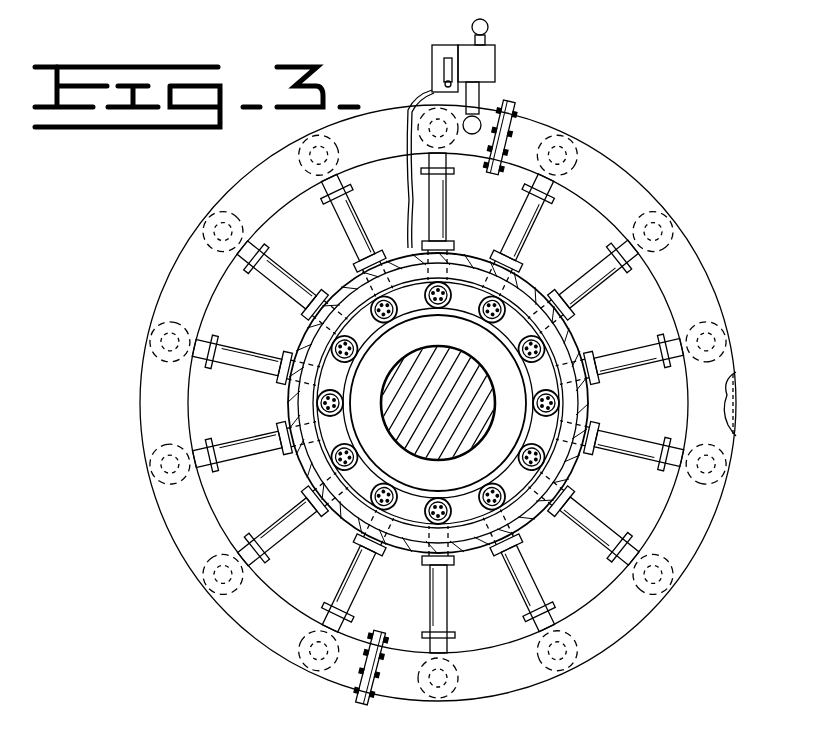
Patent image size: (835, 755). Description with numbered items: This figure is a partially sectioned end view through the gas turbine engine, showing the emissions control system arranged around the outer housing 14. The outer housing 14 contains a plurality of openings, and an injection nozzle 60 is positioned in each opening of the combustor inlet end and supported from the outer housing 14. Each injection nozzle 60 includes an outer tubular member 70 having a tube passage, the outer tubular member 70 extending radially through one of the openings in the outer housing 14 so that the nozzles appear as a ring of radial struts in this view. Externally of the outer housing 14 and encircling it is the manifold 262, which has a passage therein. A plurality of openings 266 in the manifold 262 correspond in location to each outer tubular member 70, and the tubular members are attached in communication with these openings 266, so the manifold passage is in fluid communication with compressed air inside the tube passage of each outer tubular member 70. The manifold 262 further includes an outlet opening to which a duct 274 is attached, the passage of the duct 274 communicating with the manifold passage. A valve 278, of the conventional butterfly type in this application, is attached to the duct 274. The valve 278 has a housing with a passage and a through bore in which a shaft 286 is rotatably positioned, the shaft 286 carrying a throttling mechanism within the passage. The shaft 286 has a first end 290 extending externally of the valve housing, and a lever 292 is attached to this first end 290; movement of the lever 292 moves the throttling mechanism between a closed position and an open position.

The outer housing 14 is at (298, 342).
The injection nozzle 60 is at (265, 272).
The outer tubular member 70 is at (342, 230).
The manifold 262 is at (175, 262).
The openings 266 is at (318, 160).
The duct 274 is at (506, 100).
The valve 278 is at (496, 62).
The shaft 286 is at (457, 62).
The first end 290 is at (432, 50).
The lever 292 is at (443, 82).